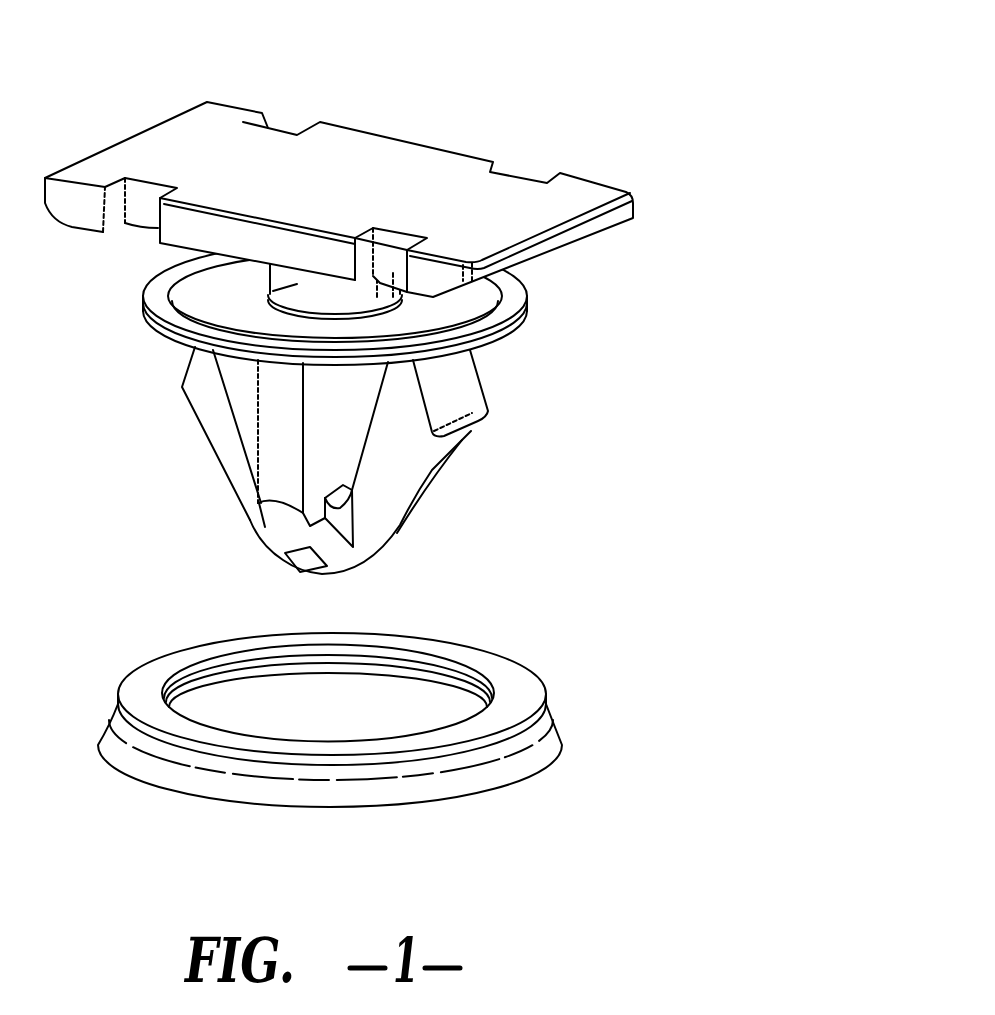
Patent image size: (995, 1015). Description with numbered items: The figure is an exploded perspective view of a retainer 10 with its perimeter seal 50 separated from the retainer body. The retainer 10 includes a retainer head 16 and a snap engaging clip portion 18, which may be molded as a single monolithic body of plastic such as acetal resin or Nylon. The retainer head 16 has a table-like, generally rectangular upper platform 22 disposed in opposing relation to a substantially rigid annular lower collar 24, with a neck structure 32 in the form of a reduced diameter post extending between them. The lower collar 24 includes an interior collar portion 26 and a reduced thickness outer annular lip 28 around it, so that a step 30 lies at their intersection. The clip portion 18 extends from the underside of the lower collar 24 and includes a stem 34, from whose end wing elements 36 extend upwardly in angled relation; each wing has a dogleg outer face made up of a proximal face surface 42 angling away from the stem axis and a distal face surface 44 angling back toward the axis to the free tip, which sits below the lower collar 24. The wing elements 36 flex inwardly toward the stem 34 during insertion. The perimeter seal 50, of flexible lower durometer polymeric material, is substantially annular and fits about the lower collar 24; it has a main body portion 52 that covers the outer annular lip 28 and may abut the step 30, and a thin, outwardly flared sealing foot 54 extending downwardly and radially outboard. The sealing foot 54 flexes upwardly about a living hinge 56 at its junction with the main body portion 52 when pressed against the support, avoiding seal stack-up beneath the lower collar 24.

The retainer 10 is at (590, 84).
The retainer head 16 is at (229, 105).
The clip portion 18 is at (266, 555).
The upper platform 22 is at (367, 150).
The lower collar 24 is at (140, 334).
The interior collar portion 26 is at (198, 290).
The outer annular lip 28 is at (513, 300).
The step 30 is at (527, 312).
The neck structure 32 is at (188, 396).
The stem 34 is at (273, 413).
The wing elements 36 is at (410, 438).
The proximal face surface 42 is at (230, 490).
The distal face surface 44 is at (186, 362).
The perimeter seal 50 is at (503, 652).
The main body portion 52 is at (460, 735).
The sealing foot 54 is at (205, 797).
The living hinge 56 is at (550, 712).